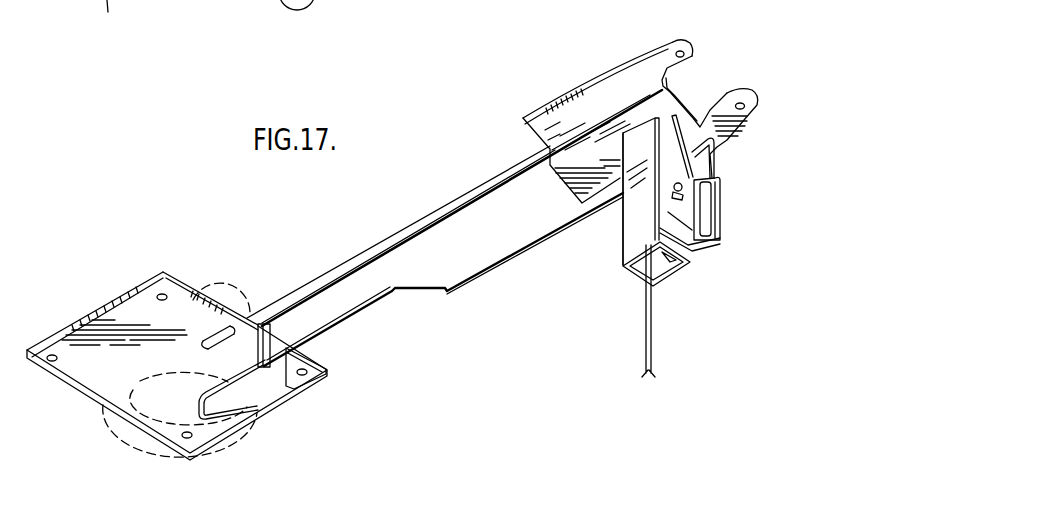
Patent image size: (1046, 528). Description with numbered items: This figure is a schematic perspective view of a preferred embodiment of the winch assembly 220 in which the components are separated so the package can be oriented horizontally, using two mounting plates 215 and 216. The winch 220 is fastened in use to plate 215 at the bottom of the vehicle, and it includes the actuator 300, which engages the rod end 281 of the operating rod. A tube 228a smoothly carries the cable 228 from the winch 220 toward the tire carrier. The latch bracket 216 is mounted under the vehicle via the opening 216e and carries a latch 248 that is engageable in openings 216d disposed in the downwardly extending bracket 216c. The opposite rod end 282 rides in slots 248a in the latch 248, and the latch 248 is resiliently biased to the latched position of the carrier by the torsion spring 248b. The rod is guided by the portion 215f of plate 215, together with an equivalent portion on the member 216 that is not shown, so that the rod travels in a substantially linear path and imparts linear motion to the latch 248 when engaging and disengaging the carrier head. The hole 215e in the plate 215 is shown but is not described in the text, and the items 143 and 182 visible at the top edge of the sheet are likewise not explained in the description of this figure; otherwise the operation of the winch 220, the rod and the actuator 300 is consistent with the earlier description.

The component 143 is at (98, 22).
The component 182 is at (293, 11).
The mounting plate 215 is at (123, 287).
The mounting hole 215e is at (168, 295).
The guide portion 215f is at (340, 388).
The latch bracket 216 is at (603, 72).
The downwardly extending bracket 216c is at (655, 214).
The openings 216d is at (622, 255).
The opening 216e is at (680, 50).
The winch assembly 220 is at (350, 238).
The cable 228 is at (658, 332).
The tube 228a is at (443, 205).
The latch 248 is at (720, 240).
The slots 248a is at (705, 248).
The torsion spring 248b is at (686, 126).
The rod end 281 is at (253, 417).
The rod end 282 is at (700, 167).
The actuator 300 is at (120, 418).